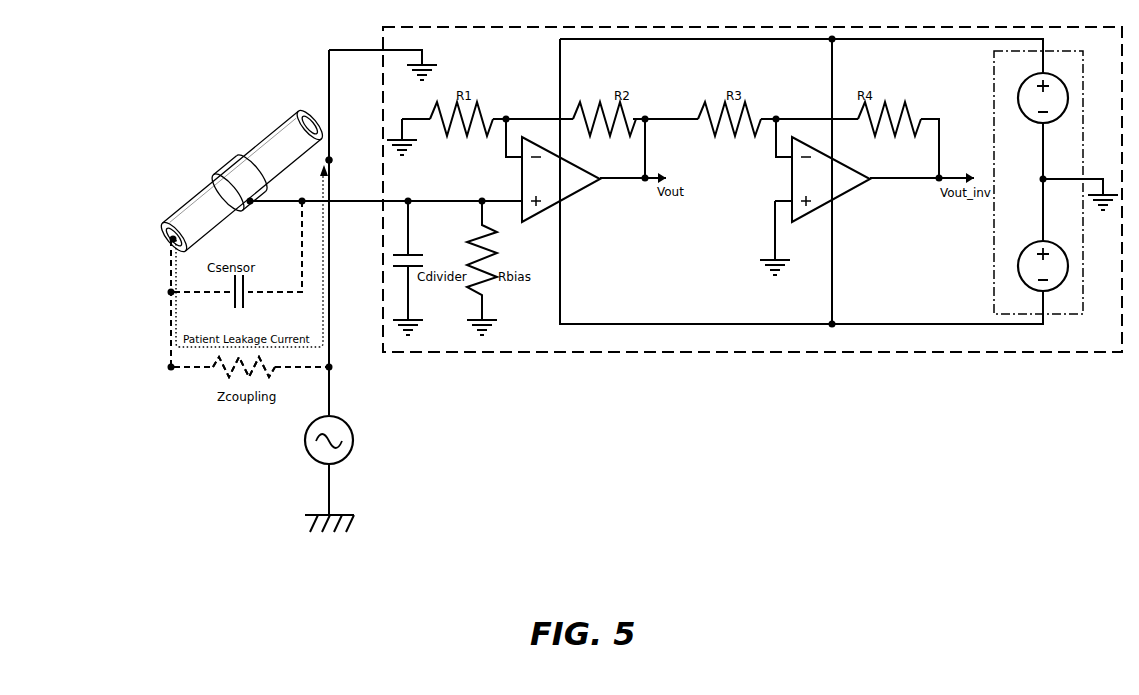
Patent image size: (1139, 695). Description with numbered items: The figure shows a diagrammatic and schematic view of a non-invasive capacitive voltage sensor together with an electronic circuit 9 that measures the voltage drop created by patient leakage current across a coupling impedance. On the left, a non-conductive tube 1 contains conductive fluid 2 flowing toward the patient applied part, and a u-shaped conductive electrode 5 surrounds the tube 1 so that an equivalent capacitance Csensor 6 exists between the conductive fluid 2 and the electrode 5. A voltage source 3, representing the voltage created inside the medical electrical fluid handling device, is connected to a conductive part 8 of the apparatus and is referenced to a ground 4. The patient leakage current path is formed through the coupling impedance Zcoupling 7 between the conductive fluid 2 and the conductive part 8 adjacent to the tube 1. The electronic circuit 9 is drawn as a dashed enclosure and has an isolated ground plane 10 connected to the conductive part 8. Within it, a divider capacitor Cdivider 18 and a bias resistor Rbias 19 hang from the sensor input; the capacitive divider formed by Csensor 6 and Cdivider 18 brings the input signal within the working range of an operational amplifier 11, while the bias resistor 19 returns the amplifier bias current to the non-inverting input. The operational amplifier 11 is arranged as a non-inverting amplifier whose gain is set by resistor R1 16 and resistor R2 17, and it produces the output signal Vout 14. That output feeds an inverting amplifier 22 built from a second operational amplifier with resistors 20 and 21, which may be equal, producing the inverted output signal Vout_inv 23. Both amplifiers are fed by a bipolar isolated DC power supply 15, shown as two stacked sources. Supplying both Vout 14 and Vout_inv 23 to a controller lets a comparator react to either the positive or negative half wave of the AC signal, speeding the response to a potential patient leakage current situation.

The non-conductive tube 1 is at (170, 224).
The conductive fluid 2 is at (166, 238).
The voltage source 3 is at (347, 423).
The ground 4 is at (311, 512).
The u-shaped conductive electrode 5 is at (214, 168).
The equivalent capacitance Csensor 6 is at (244, 281).
The coupling impedance Zcoupling 7 is at (223, 372).
The conductive part of the medical apparatus 8 is at (333, 157).
The electronic circuit 9 is at (519, 354).
The isolated ground plane 10 is at (431, 65).
The operational amplifier 11 is at (576, 196).
The output signal Vout 14 is at (650, 187).
The bipolar isolated DC power supply 15 is at (994, 93).
The resistor R1 16 is at (484, 114).
The resistor R2 17 is at (625, 112).
The divider capacitor Cdivider 18 is at (416, 252).
The bias resistor Rbias 19 is at (494, 275).
The resistor 20 is at (749, 112).
The resistor 21 is at (906, 110).
The inverting amplifier 22 is at (838, 198).
The output signal Vout_inv 23 is at (950, 174).